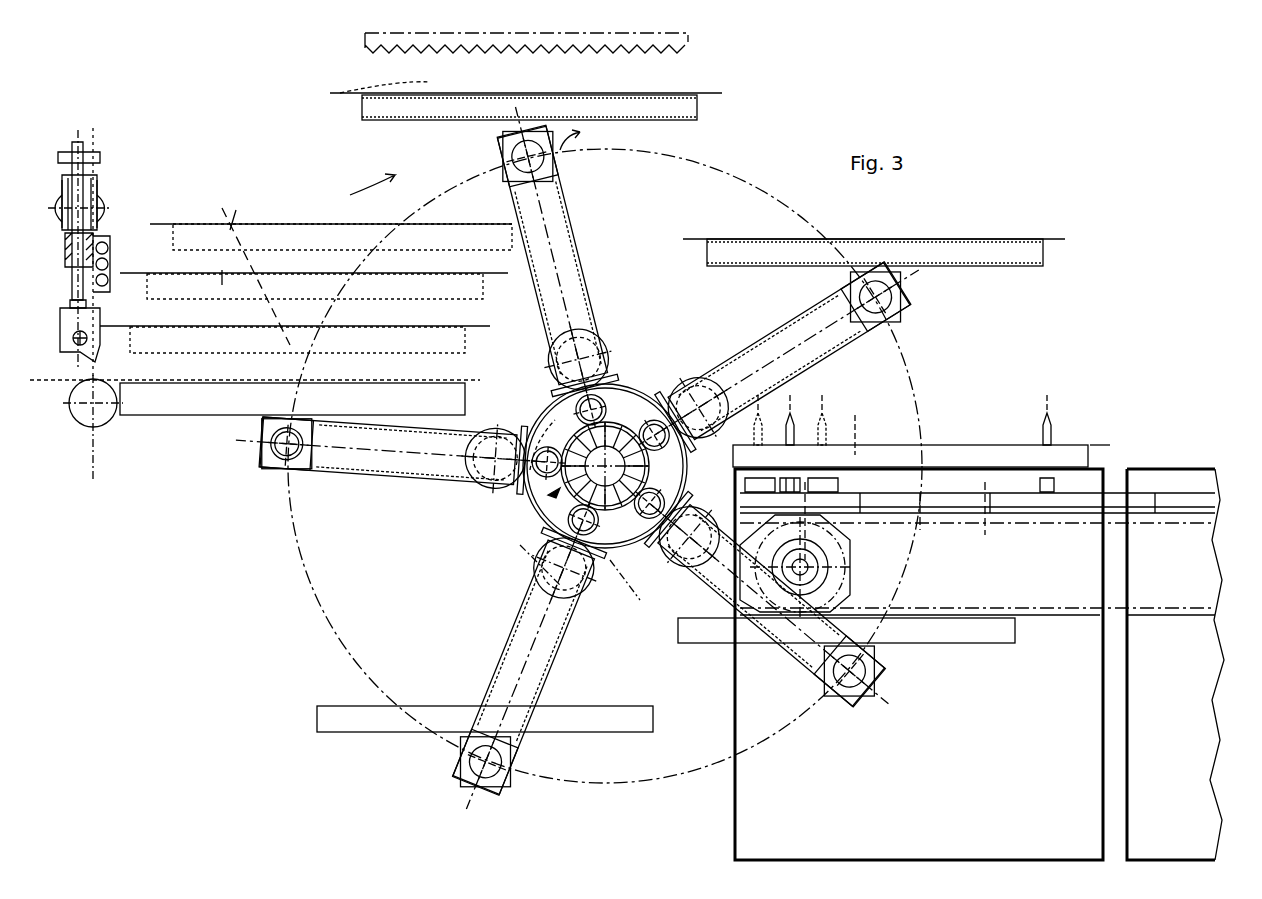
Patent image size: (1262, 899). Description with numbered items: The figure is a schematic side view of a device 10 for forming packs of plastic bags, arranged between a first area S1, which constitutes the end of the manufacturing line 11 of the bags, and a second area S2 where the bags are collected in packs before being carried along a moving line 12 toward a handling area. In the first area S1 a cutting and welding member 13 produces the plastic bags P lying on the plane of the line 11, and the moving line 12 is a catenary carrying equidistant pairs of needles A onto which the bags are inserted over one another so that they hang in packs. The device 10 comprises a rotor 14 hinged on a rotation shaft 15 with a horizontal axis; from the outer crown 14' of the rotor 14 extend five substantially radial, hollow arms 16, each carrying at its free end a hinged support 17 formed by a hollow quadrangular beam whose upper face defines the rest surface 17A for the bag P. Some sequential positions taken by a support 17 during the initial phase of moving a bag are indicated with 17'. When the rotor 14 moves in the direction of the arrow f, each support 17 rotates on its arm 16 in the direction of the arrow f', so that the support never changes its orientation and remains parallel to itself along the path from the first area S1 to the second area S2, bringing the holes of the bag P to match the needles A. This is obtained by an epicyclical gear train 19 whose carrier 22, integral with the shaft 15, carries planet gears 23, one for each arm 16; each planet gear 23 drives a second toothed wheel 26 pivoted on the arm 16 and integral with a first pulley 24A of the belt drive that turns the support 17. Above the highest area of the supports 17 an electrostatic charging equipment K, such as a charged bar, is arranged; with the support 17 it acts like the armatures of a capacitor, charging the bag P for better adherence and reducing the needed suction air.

The device for forming packs of plastic bags 10 is at (292, 582).
The manufacturing line 11 is at (50, 402).
The moving line 12 is at (1152, 476).
The cutting and welding member 13 is at (107, 181).
The rotor 14 is at (605, 466).
The outer crown of the rotor 14' is at (585, 579).
The rotation shaft 15 is at (640, 460).
The arm 16 is at (560, 230).
The support 17 is at (640, 436).
The sequential positions of the support 17' is at (306, 266).
The rest surface 17A is at (678, 96).
The epicyclical gear train 19 is at (560, 478).
The carrier 22 is at (630, 410).
The planet gear 23 is at (578, 420).
The first pulley 24A is at (520, 480).
The second toothed wheel 26 is at (592, 335).
The pairs of needles A is at (796, 440).
The electrostatic charging equipment K is at (690, 38).
The plastic bag P is at (340, 100).
The first area S1 is at (184, 437).
The second area S2 is at (878, 421).
The direction of rotor movement f is at (367, 185).
The direction of support rotation f' is at (569, 151).